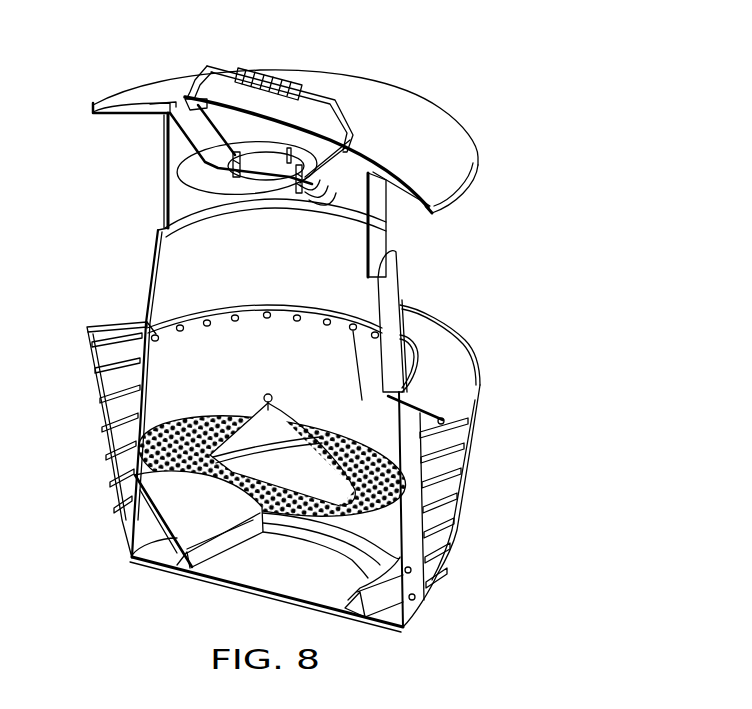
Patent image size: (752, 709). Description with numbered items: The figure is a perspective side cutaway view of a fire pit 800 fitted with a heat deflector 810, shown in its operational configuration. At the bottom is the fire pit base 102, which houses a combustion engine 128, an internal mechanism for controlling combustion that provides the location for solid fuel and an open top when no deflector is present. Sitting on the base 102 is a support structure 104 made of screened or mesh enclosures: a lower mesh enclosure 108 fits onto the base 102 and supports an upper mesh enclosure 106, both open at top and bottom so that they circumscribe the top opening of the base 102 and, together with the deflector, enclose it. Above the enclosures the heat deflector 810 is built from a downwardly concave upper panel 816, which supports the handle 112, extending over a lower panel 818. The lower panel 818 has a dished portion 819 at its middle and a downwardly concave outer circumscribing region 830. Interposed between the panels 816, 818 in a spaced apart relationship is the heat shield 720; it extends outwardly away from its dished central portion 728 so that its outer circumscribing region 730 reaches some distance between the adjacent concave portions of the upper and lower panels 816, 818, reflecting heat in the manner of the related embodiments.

The fire pit 800 is at (613, 208).
The fire pit base 102 is at (463, 480).
The support structure 104 is at (153, 284).
The upper mesh enclosure 106 is at (390, 243).
The lower mesh enclosure 108 is at (395, 284).
The handle 112 is at (212, 70).
The combustion engine 128 is at (403, 537).
The heat shield 720 is at (212, 150).
The dished center 728 is at (320, 150).
The outer circumscribing region 730 is at (347, 178).
The heat deflector 810 is at (445, 106).
The upper panel 816 is at (380, 98).
The lower panel 818 is at (130, 117).
The dished portion 819 is at (168, 163).
The outer circumscribing region 830 is at (428, 202).